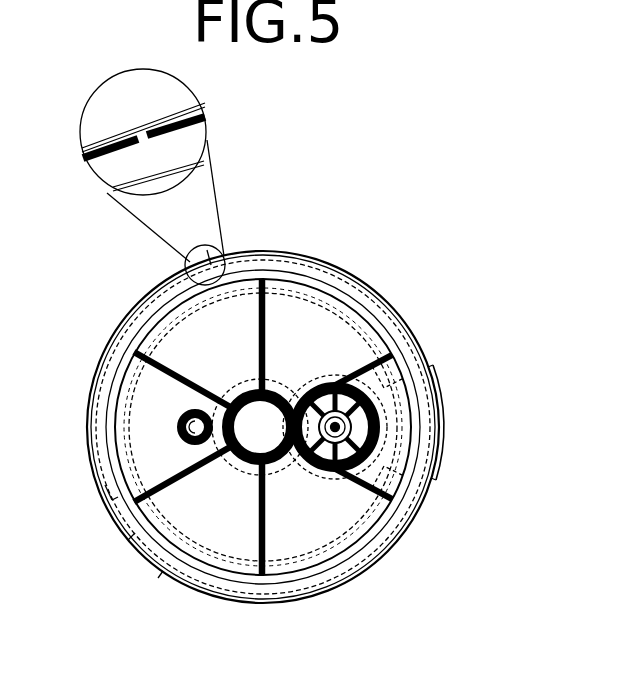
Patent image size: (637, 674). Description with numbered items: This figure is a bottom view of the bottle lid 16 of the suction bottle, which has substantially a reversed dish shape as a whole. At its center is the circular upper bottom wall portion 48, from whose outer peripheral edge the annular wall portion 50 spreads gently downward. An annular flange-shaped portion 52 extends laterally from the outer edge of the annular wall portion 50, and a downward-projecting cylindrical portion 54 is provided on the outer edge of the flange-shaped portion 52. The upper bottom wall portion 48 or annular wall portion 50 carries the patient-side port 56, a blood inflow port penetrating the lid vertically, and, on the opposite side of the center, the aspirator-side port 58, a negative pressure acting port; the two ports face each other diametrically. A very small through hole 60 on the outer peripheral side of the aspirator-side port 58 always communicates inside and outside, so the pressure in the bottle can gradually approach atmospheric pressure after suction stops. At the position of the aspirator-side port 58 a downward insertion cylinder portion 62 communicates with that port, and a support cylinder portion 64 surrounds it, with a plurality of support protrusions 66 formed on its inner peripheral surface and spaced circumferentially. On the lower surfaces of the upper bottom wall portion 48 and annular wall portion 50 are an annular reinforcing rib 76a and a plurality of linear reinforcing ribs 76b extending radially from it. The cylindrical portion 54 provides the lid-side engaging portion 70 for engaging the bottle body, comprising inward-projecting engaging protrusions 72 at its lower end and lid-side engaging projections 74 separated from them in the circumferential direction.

The bottle lid 16 is at (424, 281).
The upper bottom wall portion 48 is at (230, 470).
The annular wall portion 50 is at (148, 393).
The flange-shaped portion 52 is at (330, 566).
The cylindrical portion 54 is at (103, 137).
The patient-side port 56 is at (185, 430).
The aspirator-side port 58 is at (341, 425).
The through hole 60 is at (298, 424).
The insertion cylinder portion 62 is at (352, 427).
The support cylinder portion 64 is at (380, 440).
The support protrusions 66 is at (330, 390).
The lid-side engaging portion 70 is at (132, 549).
The engaging protrusion 72 is at (272, 262).
The lid-side engaging projection 74 is at (141, 138).
The annular reinforcing rib 76a is at (252, 398).
The linear reinforcing ribs 76b is at (270, 323).